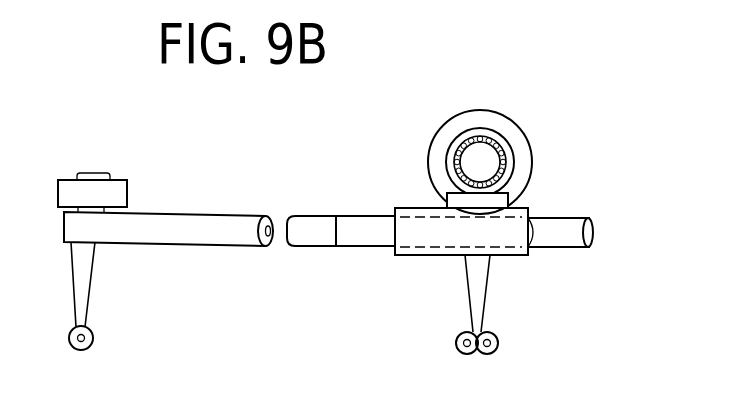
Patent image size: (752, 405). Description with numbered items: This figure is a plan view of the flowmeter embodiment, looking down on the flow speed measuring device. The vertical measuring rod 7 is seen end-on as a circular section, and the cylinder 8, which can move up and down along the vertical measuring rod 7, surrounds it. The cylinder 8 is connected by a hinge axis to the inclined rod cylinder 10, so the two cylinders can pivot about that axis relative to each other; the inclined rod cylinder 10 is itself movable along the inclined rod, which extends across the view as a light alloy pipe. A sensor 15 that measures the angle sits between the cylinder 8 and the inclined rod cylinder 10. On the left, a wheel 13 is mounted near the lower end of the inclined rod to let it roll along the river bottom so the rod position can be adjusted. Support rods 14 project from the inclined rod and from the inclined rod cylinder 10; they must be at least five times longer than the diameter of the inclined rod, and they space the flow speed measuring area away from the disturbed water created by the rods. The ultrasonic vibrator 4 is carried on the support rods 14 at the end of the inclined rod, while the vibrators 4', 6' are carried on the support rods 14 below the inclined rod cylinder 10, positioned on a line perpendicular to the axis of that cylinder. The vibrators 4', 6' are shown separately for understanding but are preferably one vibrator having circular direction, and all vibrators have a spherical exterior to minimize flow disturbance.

The ultrasonic vibrator 4 is at (106, 339).
The ultrasonic vibrator 4' is at (444, 346).
The ultrasonic vibrator 6' is at (510, 346).
The vertical measuring rod 7 is at (508, 122).
The cylinder 8 is at (456, 160).
The inclined rod cylinder 10 is at (423, 225).
The wheel 13 is at (118, 193).
The support rods 14 is at (90, 268).
The sensor 15 is at (497, 203).